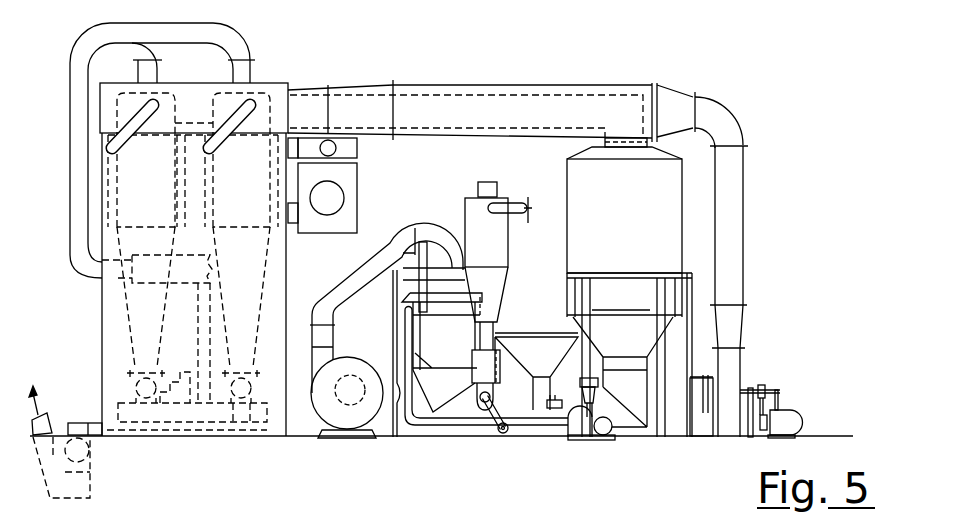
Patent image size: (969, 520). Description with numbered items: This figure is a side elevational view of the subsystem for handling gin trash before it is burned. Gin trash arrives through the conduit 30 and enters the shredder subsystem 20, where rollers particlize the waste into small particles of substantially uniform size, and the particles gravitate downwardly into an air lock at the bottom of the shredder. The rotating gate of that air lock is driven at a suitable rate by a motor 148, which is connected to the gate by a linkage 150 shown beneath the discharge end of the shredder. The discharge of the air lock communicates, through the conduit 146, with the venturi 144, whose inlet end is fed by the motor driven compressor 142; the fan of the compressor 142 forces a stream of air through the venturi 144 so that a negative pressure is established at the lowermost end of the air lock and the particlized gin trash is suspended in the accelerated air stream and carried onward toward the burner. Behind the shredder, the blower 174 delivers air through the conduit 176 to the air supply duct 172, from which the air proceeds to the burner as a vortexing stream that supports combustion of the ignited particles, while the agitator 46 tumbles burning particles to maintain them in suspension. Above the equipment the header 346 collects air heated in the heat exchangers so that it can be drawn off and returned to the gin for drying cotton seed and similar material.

The shredder subsystem 20 is at (456, 236).
The conduit 30 is at (518, 206).
The agitator 46 is at (518, 337).
The motor driven compressor 142 is at (573, 440).
The venturi 144 is at (478, 423).
The conduit 146 is at (528, 428).
The motor 148 is at (503, 434).
The crank 150 is at (482, 412).
The air supply duct 172 is at (445, 278).
The blower 174 is at (350, 346).
The conduit 176 is at (363, 269).
The header 346 is at (348, 192).